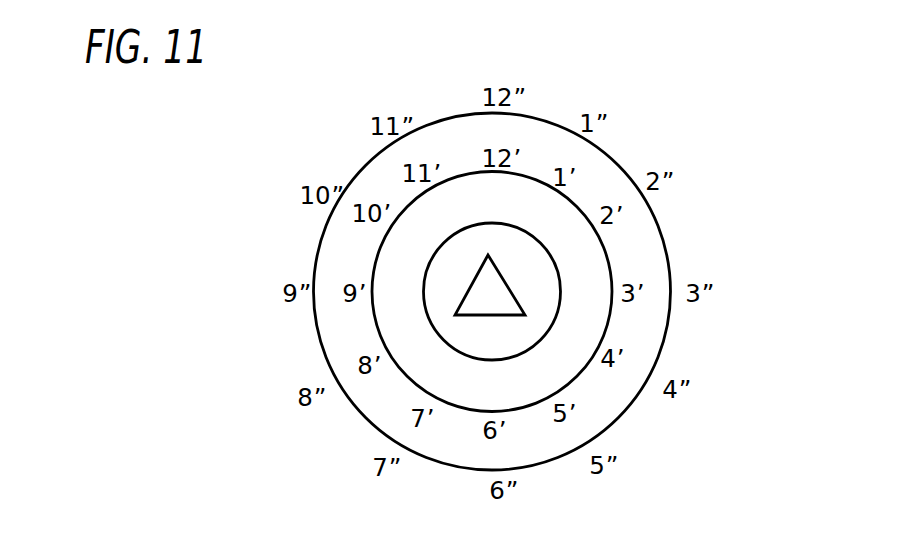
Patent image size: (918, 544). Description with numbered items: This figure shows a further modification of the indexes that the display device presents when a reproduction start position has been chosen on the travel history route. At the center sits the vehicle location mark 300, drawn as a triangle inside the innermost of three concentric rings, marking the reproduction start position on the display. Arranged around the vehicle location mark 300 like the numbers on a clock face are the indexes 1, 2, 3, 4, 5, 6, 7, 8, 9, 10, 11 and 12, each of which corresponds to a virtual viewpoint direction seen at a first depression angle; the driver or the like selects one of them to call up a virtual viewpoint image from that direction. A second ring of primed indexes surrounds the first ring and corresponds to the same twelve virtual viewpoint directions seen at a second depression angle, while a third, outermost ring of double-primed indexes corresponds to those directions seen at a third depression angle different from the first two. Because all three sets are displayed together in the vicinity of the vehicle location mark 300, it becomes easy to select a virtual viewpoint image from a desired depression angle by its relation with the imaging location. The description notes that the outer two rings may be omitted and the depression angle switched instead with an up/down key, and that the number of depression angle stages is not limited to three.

The vehicle location mark 300 is at (518, 303).
The index 1 is at (535, 220).
The index 2 is at (565, 247).
The index 3 is at (573, 293).
The index 4 is at (560, 337).
The index 5 is at (533, 365).
The index 6 is at (490, 377).
The index 7 is at (445, 363).
The index 8 is at (418, 335).
The index 9 is at (407, 293).
The index 10 is at (416, 247).
The index 11 is at (444, 217).
The index 12 is at (491, 213).